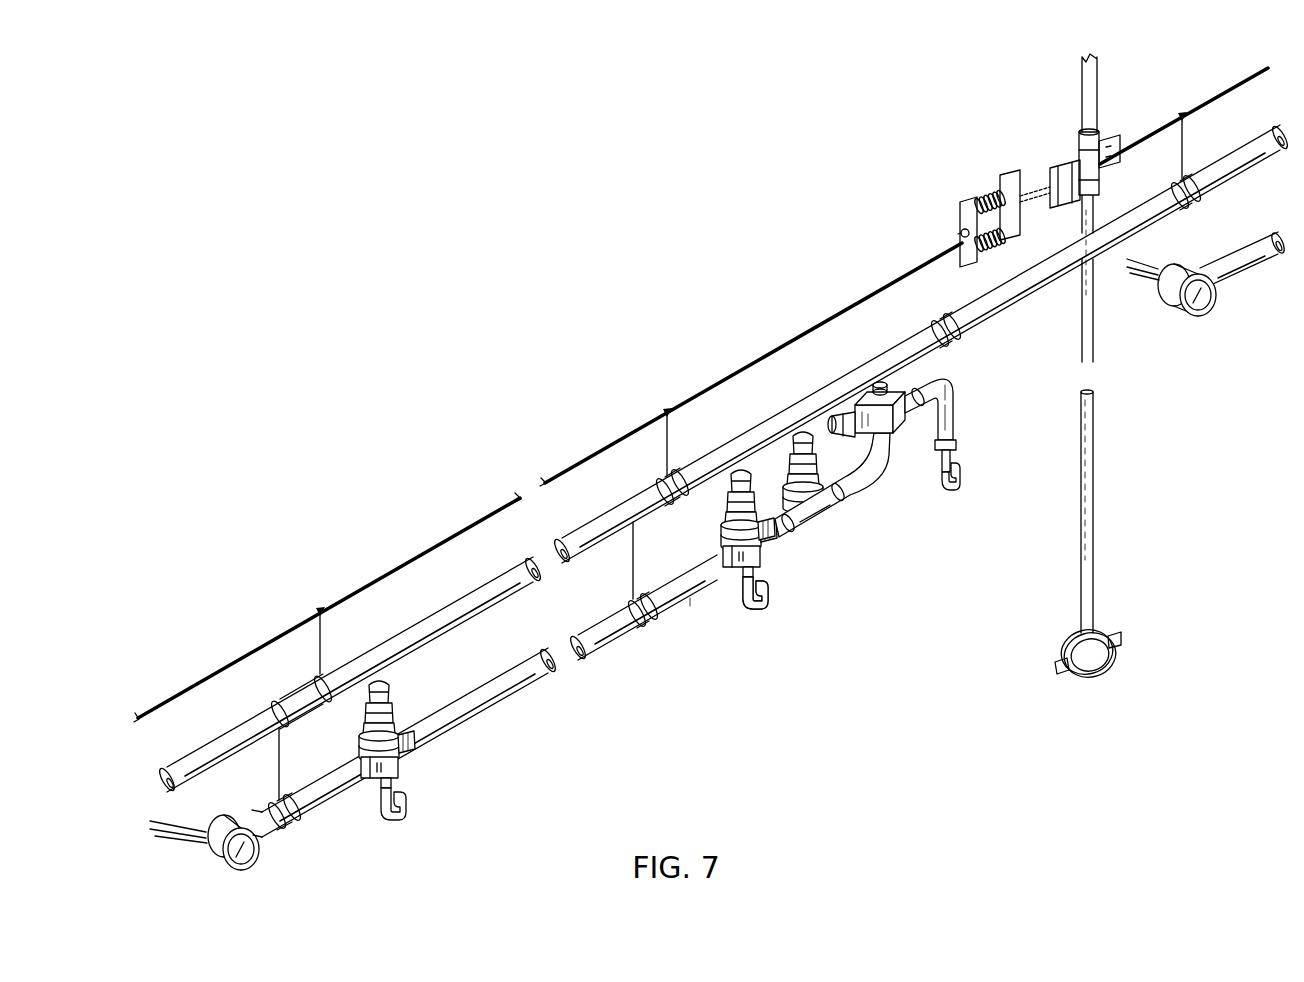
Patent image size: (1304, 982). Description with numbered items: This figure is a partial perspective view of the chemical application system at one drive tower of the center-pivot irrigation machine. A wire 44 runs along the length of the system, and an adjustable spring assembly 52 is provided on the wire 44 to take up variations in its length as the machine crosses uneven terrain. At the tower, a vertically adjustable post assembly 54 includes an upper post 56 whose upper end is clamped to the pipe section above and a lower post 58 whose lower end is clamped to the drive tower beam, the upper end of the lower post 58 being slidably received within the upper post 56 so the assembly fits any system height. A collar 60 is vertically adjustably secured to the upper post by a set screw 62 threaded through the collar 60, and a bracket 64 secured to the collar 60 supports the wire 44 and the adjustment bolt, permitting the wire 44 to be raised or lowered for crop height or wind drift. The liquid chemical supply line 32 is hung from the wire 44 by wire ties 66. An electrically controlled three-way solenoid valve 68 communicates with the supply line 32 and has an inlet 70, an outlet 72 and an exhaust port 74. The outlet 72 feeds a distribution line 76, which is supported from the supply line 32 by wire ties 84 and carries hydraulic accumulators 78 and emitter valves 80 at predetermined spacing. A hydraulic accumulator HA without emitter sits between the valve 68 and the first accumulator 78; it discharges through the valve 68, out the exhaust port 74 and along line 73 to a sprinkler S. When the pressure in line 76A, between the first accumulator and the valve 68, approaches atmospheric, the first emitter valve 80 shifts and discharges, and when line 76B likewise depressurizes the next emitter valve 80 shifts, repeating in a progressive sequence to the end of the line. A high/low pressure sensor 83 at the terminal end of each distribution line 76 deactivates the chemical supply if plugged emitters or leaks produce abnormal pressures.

The liquid chemical supply line 32 is at (536, 540).
The wire 44 is at (883, 276).
The adjustable spring assembly 52 is at (986, 203).
The vertically adjustable post assembly 54 is at (1122, 86).
The upper post 56 is at (1081, 105).
The lower post 58 is at (1095, 561).
The collar 60 is at (1097, 143).
The set screw 62 is at (1077, 198).
The bracket 64 is at (1120, 160).
The wire ties 66 is at (665, 447).
The three-way solenoid valve 68 is at (888, 386).
The inlet 70 is at (906, 386).
The outlet 72 is at (900, 440).
The line 73 is at (962, 386).
The exhaust port 74 is at (955, 412).
The distribution line 76 is at (611, 670).
The line 76A is at (780, 532).
The line 76B is at (690, 604).
The hydraulic accumulator 78 is at (724, 518).
The emitter valve 80 is at (765, 602).
The high/low pressure sensor 83 is at (1208, 308).
The wire ties 84 is at (633, 568).
The hydraulic accumulator HA is at (843, 432).
The sprinkler S is at (960, 474).